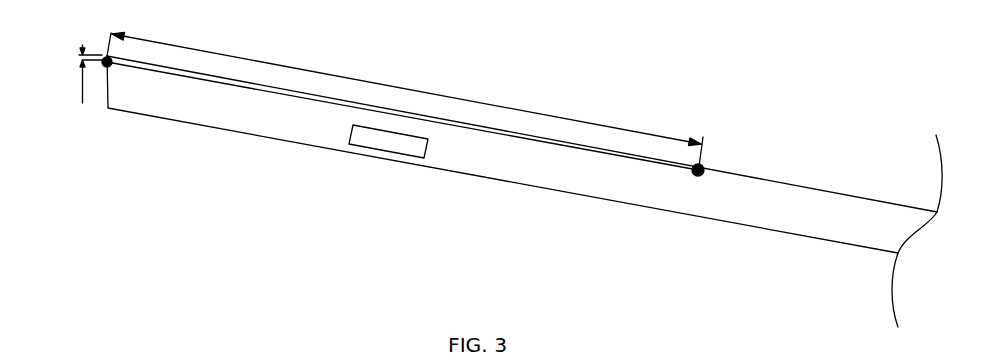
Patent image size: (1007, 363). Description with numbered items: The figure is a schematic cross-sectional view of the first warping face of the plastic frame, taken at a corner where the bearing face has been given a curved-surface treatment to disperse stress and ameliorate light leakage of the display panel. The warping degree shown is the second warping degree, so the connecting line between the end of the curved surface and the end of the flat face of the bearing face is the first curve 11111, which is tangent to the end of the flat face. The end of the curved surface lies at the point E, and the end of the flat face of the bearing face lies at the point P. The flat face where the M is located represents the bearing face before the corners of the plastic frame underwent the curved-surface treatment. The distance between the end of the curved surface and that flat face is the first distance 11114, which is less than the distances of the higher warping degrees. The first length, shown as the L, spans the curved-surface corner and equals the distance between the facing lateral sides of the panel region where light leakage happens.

The first curve 11111 is at (237, 87).
The first distance 11114 is at (80, 55).
The point E is at (106, 64).
The point P is at (702, 165).
The first length L is at (405, 99).
The flat face M is at (331, 99).